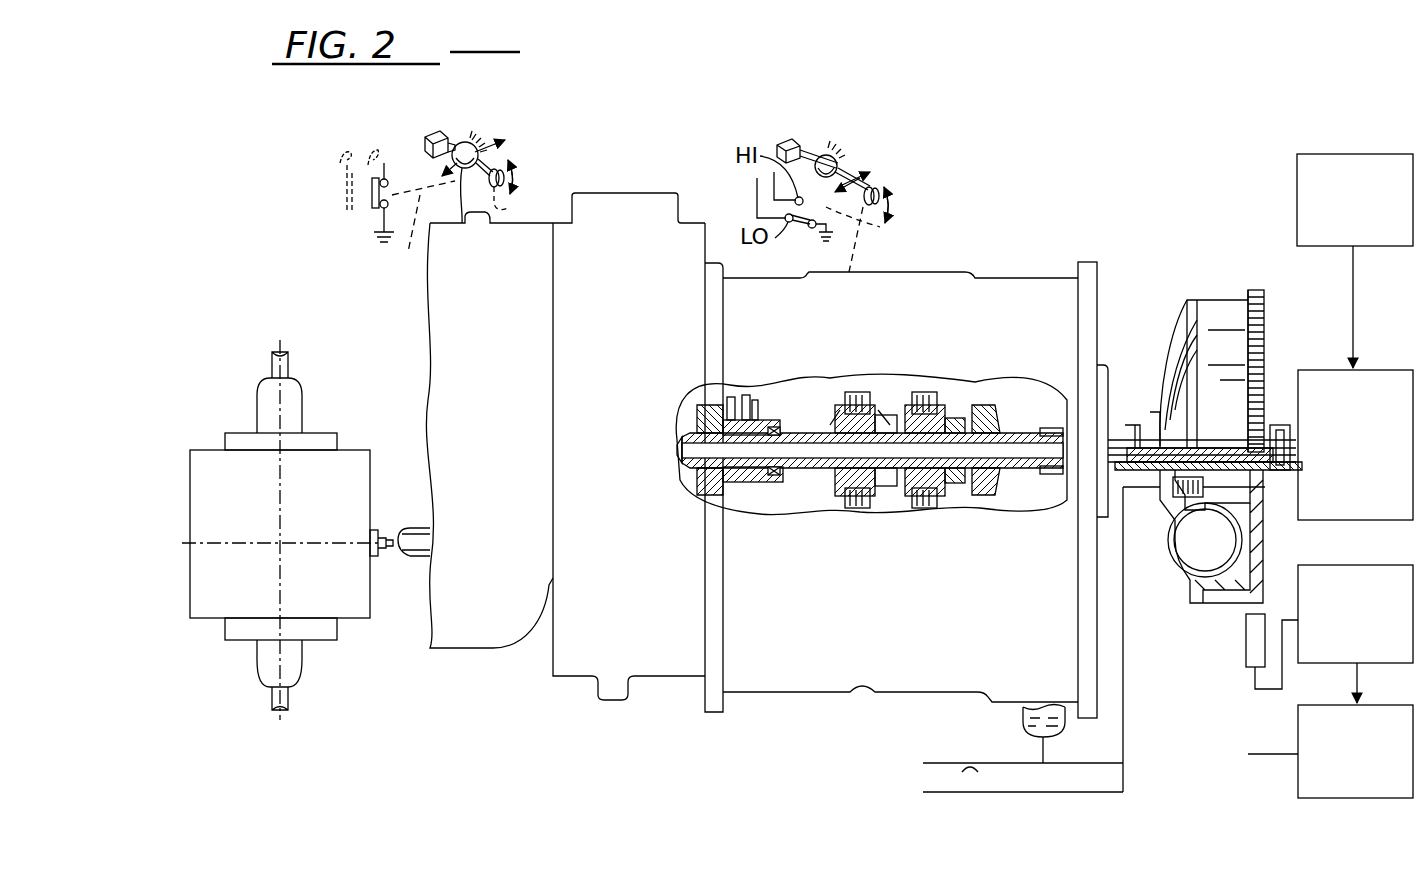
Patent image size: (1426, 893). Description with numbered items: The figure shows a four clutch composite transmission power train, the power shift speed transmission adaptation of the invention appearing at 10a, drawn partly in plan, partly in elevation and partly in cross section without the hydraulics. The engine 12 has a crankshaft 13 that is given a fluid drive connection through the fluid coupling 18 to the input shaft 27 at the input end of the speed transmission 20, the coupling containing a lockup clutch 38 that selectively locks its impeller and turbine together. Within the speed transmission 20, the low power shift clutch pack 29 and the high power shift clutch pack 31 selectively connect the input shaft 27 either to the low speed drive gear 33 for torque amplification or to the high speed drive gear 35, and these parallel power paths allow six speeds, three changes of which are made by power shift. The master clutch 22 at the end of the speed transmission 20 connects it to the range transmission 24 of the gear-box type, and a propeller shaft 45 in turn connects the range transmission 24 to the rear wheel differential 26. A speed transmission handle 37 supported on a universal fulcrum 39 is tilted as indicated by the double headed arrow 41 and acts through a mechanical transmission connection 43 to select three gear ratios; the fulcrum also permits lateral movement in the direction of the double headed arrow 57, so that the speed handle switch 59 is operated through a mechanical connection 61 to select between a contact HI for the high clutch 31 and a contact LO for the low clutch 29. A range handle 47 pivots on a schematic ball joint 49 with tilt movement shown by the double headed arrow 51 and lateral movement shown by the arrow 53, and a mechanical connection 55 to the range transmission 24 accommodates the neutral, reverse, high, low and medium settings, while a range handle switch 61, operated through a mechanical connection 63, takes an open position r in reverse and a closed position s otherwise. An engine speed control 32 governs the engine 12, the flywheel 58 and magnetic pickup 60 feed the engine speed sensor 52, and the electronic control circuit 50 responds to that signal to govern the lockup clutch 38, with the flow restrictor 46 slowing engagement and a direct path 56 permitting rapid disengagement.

The composite transmission power train embodiment 10a is at (622, 125).
The engine 12 is at (1405, 372).
The crankshaft 13 is at (1285, 428).
The fluid coupling 18 is at (1168, 330).
The speed transmission 20 is at (798, 680).
The master clutch 22 is at (632, 690).
The range transmission 24 is at (465, 648).
The differential 26 is at (345, 450).
The input shaft 27 is at (1118, 440).
The low power shift clutch pack 29 is at (925, 430).
The high power shift clutch pack 31 is at (870, 430).
The engine speed control 32 is at (1297, 158).
The low speed drive gear 33 is at (960, 498).
The high speed drive gear 35 is at (845, 500).
The speed transmission handle 37 is at (788, 140).
The lockup clutch 38 is at (1265, 487).
The universal fulcrum 39 is at (836, 160).
The double headed arrow 41 is at (893, 205).
The mechanical transmission connection 43 is at (860, 268).
The propeller shaft 45 is at (386, 550).
The flow restrictor 46 is at (965, 757).
The range handle 47 is at (440, 132).
The ball joint 49 is at (478, 141).
The electronic control circuit 50 is at (1298, 786).
The double headed arrow 51 is at (518, 182).
The engine speed sensor 52 is at (1348, 566).
The arrow 53 is at (462, 210).
The mechanical connection 55 is at (500, 210).
The direct path 56 is at (1045, 792).
The double headed arrow 57 is at (842, 186).
The flywheel 58 is at (1258, 292).
The speed handle switch 59 is at (800, 230).
The magnetic pickup 60 is at (1246, 645).
The range handle switch 61 is at (380, 208).
The mechanical connection 63 is at (420, 224).